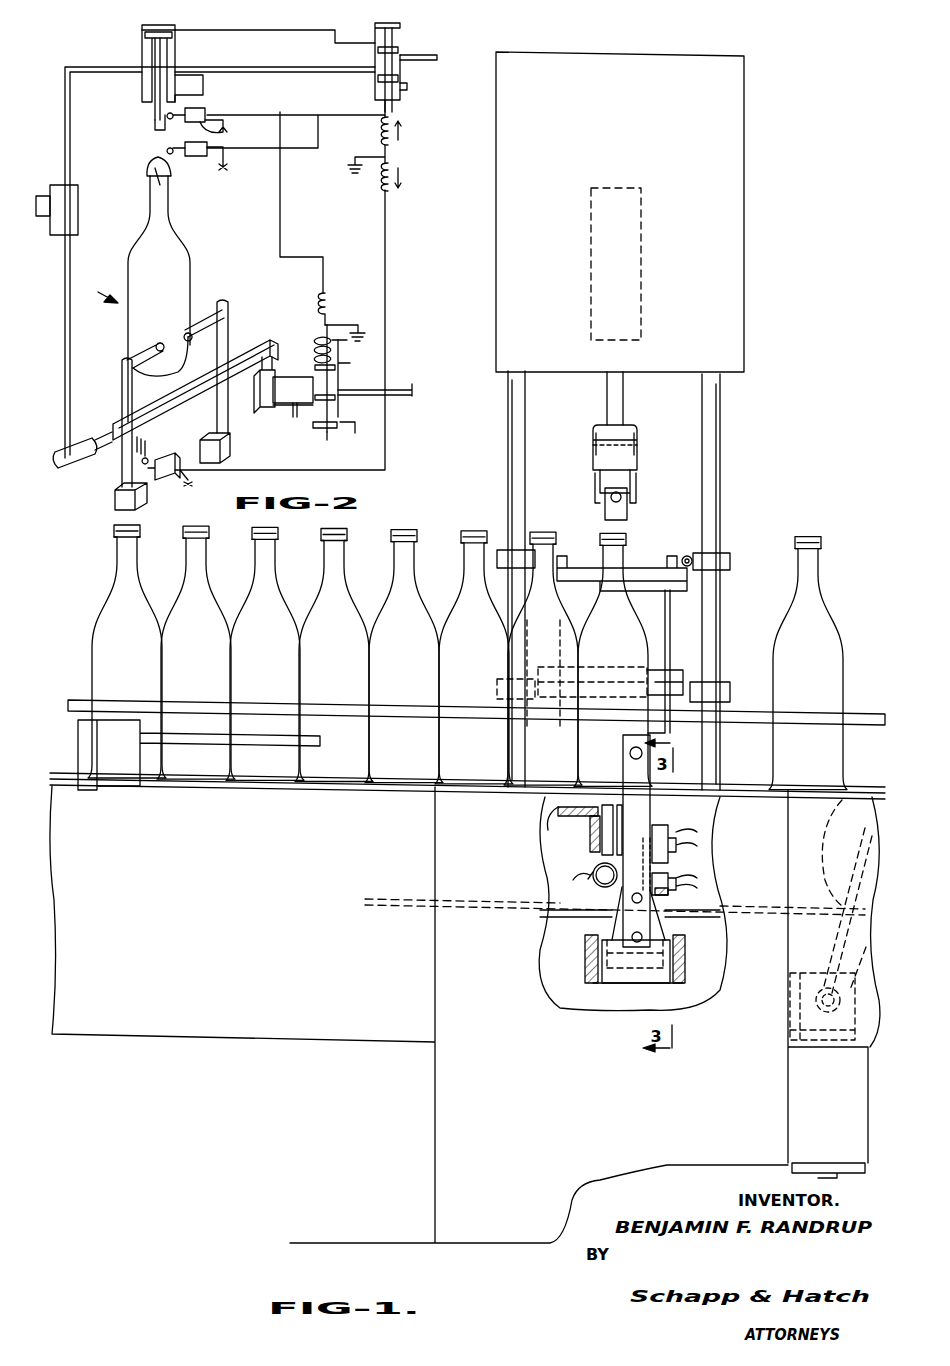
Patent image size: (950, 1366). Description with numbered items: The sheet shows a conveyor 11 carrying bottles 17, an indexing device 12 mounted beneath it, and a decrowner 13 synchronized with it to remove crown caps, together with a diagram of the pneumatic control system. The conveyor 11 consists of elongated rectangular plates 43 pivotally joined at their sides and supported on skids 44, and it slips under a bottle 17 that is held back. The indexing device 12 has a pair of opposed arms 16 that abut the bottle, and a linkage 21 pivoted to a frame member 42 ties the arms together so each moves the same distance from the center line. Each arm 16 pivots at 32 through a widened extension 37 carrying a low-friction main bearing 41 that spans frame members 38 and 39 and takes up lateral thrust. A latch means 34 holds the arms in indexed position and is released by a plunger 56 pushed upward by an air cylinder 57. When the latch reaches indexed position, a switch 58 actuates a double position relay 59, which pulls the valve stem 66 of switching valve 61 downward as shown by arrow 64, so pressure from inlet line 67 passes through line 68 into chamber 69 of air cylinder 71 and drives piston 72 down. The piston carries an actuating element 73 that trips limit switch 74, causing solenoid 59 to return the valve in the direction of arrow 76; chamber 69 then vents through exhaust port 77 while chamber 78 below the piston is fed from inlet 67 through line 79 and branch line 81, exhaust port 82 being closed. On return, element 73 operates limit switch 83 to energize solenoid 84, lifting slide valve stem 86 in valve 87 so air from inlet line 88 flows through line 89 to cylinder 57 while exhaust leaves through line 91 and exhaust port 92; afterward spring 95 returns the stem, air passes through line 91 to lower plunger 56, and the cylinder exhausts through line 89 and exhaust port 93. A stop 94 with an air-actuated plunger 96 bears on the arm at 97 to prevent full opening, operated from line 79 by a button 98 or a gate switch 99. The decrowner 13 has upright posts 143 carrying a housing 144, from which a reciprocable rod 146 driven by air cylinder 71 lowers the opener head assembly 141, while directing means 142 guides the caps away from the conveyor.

In FIG. 1, the conveyor 11 is at (210, 793).
In FIG. 1, the indexing device 12 is at (432, 964).
In FIG. 1, the decrowner 13 is at (750, 280).
In FIG. 2, the arms 16 is at (122, 384).
In FIG. 1, the arms 16 is at (650, 816).
In FIG. 2, the bottle 17 is at (150, 166).
In FIG. 1, the bottle 17 is at (629, 626).
In FIG. 1, the linkage 21 is at (592, 840).
In FIG. 1, the pivot 32 is at (685, 962).
In FIG. 1, the latch means 34 is at (680, 831).
In FIG. 1, the widened extension 37 is at (660, 925).
In FIG. 1, the frame member 38 is at (592, 985).
In FIG. 1, the frame member 39 is at (686, 998).
In FIG. 1, the main bearing 41 is at (636, 984).
In FIG. 1, the frame member 42 is at (545, 827).
In FIG. 1, the elongated rectangular plates 43 is at (340, 782).
In FIG. 1, the skids 44 is at (258, 792).
In FIG. 2, the plunger 56 is at (313, 363).
In FIG. 2, the air cylinder 57 is at (262, 412).
In FIG. 1, the air cylinder 57 is at (668, 872).
In FIG. 2, the switch 58 is at (165, 456).
In FIG. 2, the double position relay 59 is at (395, 156).
In FIG. 2, the switching valve 61 is at (420, 42).
In FIG. 2, the arrow 64 is at (402, 179).
In FIG. 2, the valve stem 66 is at (392, 107).
In FIG. 2, the inlet line 67 is at (437, 57).
In FIG. 2, the line 68 is at (300, 32).
In FIG. 2, the chamber 69 is at (142, 27).
In FIG. 2, the air cylinder 71 is at (112, 40).
In FIG. 1, the air cylinder 71 is at (641, 271).
In FIG. 2, the piston 72 is at (154, 44).
In FIG. 2, the actuating element 73 is at (164, 128).
In FIG. 2, the limit switch 74 is at (196, 156).
In FIG. 2, the arrow 76 is at (402, 135).
In FIG. 2, the exhaust port 77 is at (400, 38).
In FIG. 2, the chamber 78 is at (168, 60).
In FIG. 2, the line 79 is at (258, 64).
In FIG. 2, the branch line 81 is at (203, 84).
In FIG. 2, the exhaust port 82 is at (407, 87).
In FIG. 2, the limit switch 83 is at (224, 135).
In FIG. 2, the solenoid 84 is at (319, 309).
In FIG. 2, the slide valve stem 86 is at (338, 341).
In FIG. 2, the valve 87 is at (322, 438).
In FIG. 2, the inlet line 88 is at (412, 388).
In FIG. 2, the line 89 is at (293, 420).
In FIG. 2, the line 91 is at (293, 390).
In FIG. 2, the exhaust port 92 is at (350, 364).
In FIG. 2, the exhaust port 93 is at (350, 434).
In FIG. 2, the stop 94 is at (70, 440).
In FIG. 2, the spring 95 is at (318, 341).
In FIG. 2, the air-actuated plunger 96 is at (103, 445).
In FIG. 2, the abutment point 97 is at (128, 412).
In FIG. 2, the button 98 is at (55, 190).
In FIG. 1, the gate switch 99 is at (165, 748).
In FIG. 1, the opener head assembly 141 is at (640, 462).
In FIG. 1, the directing means 142 is at (648, 560).
In FIG. 1, the columns 143 is at (508, 433).
In FIG. 1, the housing 144 is at (744, 172).
In FIG. 1, the reciprocable rod 146 is at (623, 405).